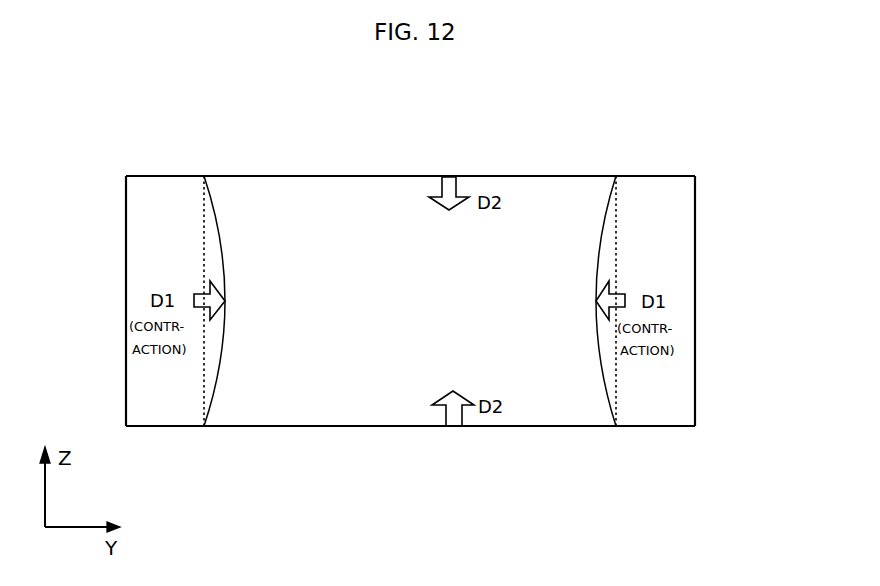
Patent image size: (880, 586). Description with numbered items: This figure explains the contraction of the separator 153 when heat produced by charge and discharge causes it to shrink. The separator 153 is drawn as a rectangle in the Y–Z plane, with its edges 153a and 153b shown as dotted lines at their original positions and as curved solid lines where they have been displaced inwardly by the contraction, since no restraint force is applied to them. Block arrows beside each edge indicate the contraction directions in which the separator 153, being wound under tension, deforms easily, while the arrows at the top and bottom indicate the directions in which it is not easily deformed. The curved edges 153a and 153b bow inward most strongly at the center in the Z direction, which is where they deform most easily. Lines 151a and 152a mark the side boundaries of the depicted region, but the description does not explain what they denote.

The first side wall 151a is at (143, 235).
The second side wall 152a is at (675, 243).
The separator 153 is at (398, 202).
The edge of the separator 153a is at (603, 218).
The edge of the separator 153b is at (218, 220).